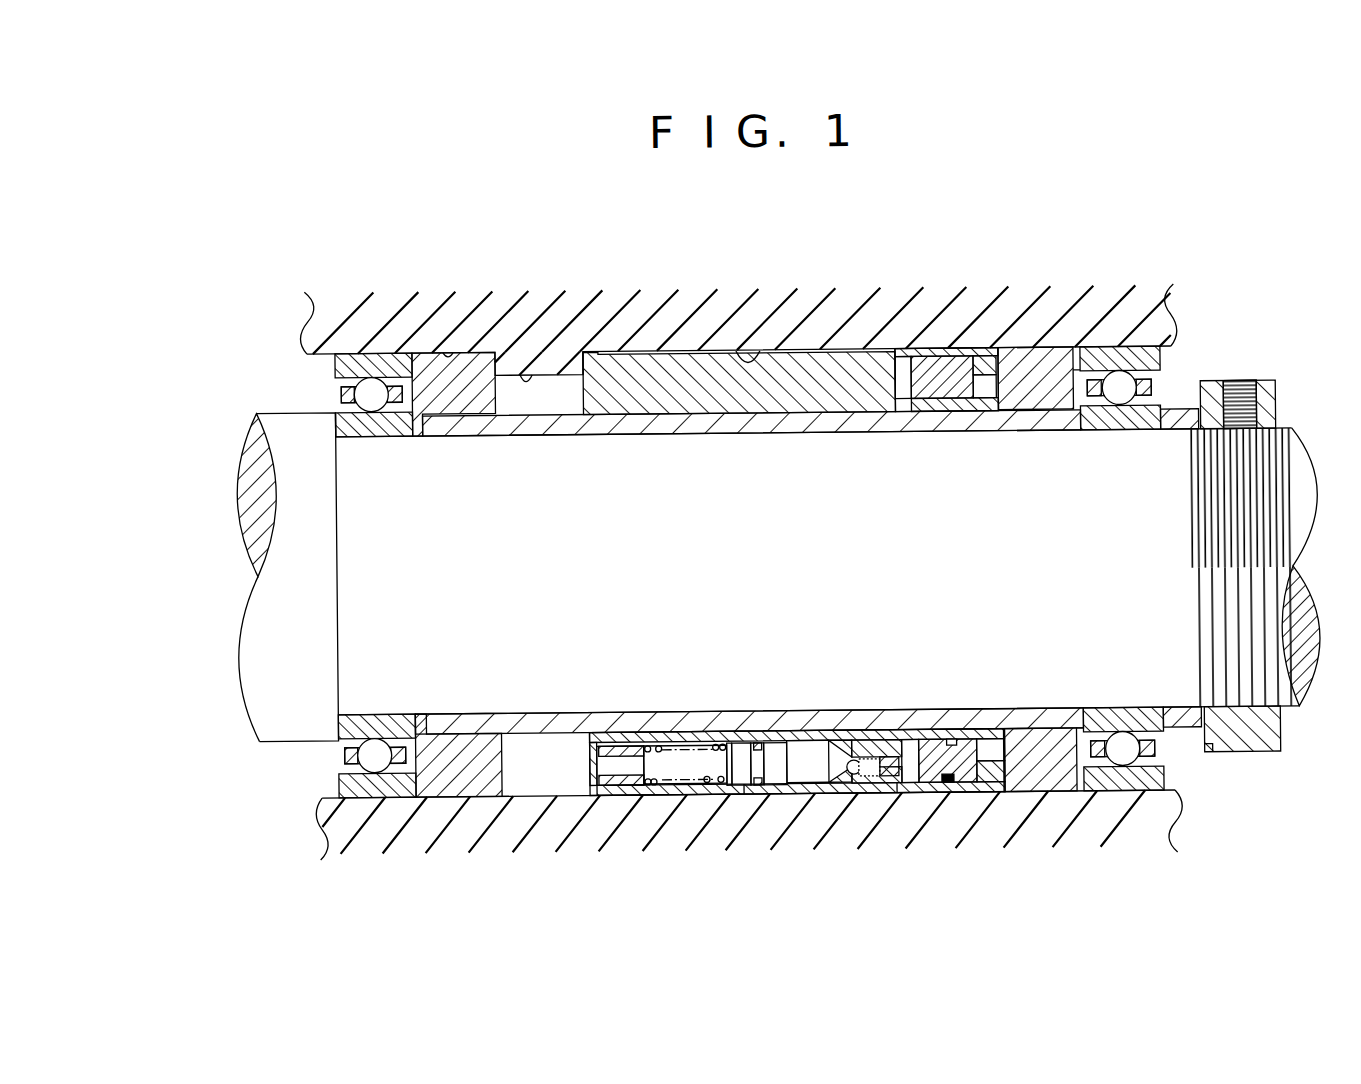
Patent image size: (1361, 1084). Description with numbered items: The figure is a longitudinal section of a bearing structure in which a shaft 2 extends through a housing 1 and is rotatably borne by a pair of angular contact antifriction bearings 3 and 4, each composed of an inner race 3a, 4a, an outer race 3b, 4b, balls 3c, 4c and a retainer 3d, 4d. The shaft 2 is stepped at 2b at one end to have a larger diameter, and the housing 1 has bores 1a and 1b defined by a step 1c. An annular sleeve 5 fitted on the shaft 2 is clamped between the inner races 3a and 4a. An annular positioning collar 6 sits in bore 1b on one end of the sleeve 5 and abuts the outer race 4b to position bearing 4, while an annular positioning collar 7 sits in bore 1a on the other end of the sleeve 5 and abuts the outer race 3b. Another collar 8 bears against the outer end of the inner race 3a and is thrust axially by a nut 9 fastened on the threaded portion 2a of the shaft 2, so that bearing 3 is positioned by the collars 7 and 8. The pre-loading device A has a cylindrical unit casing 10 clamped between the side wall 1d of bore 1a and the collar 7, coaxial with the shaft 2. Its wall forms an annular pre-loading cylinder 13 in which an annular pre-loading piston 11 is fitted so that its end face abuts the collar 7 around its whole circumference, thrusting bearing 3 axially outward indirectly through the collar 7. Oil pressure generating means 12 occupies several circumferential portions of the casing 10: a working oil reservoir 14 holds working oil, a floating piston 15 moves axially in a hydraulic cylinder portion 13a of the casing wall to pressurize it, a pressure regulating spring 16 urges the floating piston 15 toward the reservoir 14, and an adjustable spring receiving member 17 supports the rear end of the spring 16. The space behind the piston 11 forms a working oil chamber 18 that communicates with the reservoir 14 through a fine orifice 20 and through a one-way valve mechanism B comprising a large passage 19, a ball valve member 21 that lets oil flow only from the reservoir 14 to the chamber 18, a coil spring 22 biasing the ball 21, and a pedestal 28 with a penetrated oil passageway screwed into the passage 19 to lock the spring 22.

The housing 1 is at (310, 366).
The bore 1a is at (742, 352).
The bore 1b is at (450, 350).
The step 1c is at (527, 372).
The side wall 1d is at (586, 352).
The shaft 2 is at (736, 589).
The threaded portion 2a is at (1281, 430).
The step 2b is at (336, 434).
The antifriction bearing 3 is at (1174, 626).
The inner race 3a is at (1105, 716).
The outer race 3b is at (1120, 794).
The balls 3c is at (1136, 760).
The retainer 3d is at (1160, 752).
The antifriction bearing 4 is at (397, 643).
The inner race 4a is at (383, 716).
The outer race 4b is at (365, 794).
The balls 4c is at (385, 770).
The retainer 4d is at (420, 780).
The annular sleeve 5 is at (662, 433).
The annular positioning collar 6 is at (452, 738).
The annular positioning collar 7 is at (1040, 745).
The annular positioning collar 8 is at (1178, 711).
The nut 9 is at (1278, 732).
The cylindrical unit casing 10 is at (792, 405).
The annular pre-loading piston 11 is at (950, 358).
The oil pressure generating means 12 is at (690, 748).
The annular pre-loading cylinder 13 is at (966, 400).
The hydraulic cylinder portion 13a is at (742, 792).
The working oil reservoir 14 is at (790, 752).
The floating piston 15 is at (740, 752).
The pressure regulating spring 16 is at (708, 790).
The spring receiving member 17 is at (618, 790).
The working oil chamber 18 is at (903, 398).
The large passage 19 is at (878, 785).
The orifice 20 is at (848, 760).
The valve member 21 is at (847, 785).
The coil spring 22 is at (862, 785).
The pedestal 28 is at (896, 795).
The antifriction bearing pre-loading device A is at (760, 798).
The one-way valve mechanism B is at (812, 900).